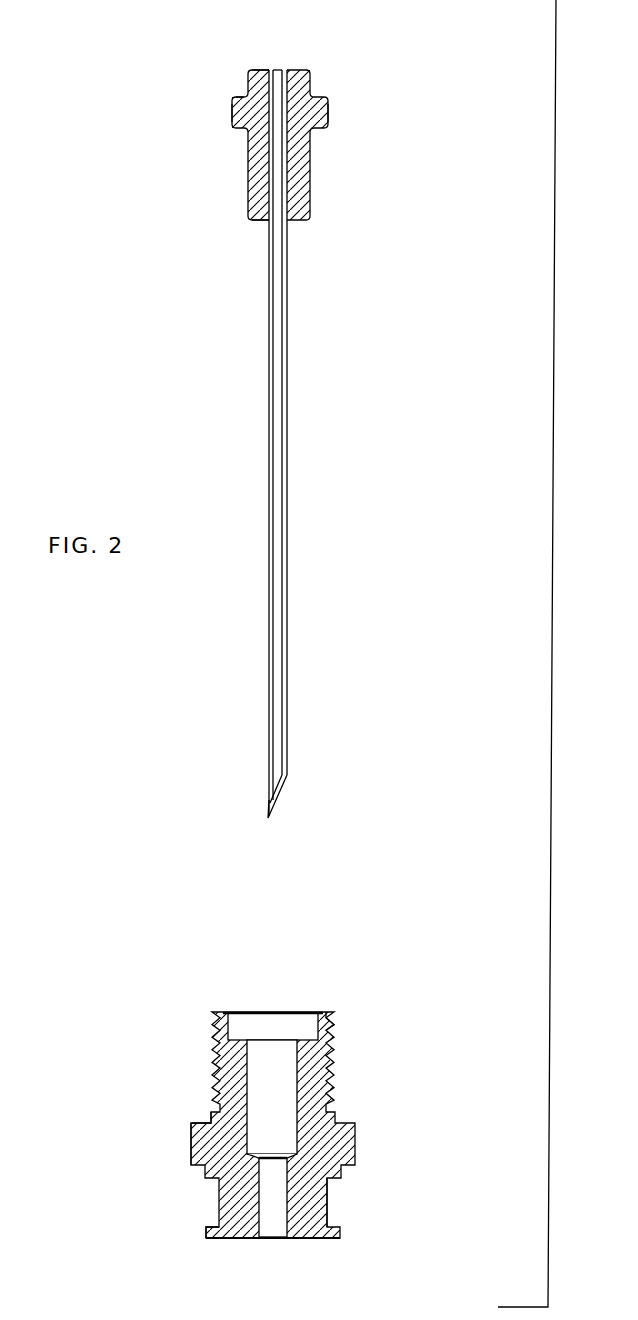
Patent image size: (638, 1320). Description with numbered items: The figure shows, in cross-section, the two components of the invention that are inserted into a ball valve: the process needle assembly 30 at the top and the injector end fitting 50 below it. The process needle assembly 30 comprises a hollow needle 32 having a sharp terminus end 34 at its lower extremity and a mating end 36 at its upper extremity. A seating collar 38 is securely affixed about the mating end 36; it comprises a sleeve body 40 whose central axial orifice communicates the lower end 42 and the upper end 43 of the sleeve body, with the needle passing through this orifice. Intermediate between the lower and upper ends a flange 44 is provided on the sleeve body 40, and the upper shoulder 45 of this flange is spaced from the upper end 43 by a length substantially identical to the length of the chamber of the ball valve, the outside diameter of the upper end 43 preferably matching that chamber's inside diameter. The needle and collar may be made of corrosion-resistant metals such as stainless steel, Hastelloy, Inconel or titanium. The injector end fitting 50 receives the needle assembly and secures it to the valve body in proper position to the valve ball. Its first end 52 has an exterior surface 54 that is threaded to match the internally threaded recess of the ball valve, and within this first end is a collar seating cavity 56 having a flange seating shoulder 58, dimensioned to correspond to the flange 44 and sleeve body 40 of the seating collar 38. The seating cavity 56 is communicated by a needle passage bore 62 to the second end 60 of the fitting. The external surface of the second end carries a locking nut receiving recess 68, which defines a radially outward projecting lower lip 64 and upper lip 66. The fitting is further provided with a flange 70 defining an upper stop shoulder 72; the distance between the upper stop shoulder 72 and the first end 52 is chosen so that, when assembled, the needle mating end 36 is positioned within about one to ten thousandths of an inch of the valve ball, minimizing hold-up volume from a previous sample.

The process needle assembly 30 is at (300, 466).
The hollow needle 32 is at (283, 557).
The sharp terminus end 34 is at (267, 812).
The mating end 36 is at (287, 70).
The seating collar 38 is at (342, 153).
The sleeve body 40 is at (310, 200).
The lower end 42 is at (263, 222).
The upper end 43 is at (265, 70).
The flange 44 is at (232, 118).
The upper shoulder 45 is at (240, 97).
The injector end fitting 50 is at (360, 1100).
The first end 52 is at (322, 1015).
The exterior surface 54 is at (330, 1062).
The collar seating cavity 56 is at (258, 1050).
The flange seating shoulder 58 is at (240, 1030).
The second end 60 is at (327, 1240).
The needle passage bore 62 is at (272, 1180).
The lower lip 64 is at (203, 1228).
The upper lip 66 is at (205, 1173).
The locking nut receiving recess 68 is at (327, 1213).
The flange 70 is at (188, 1158).
The upper stop shoulder 72 is at (198, 1117).